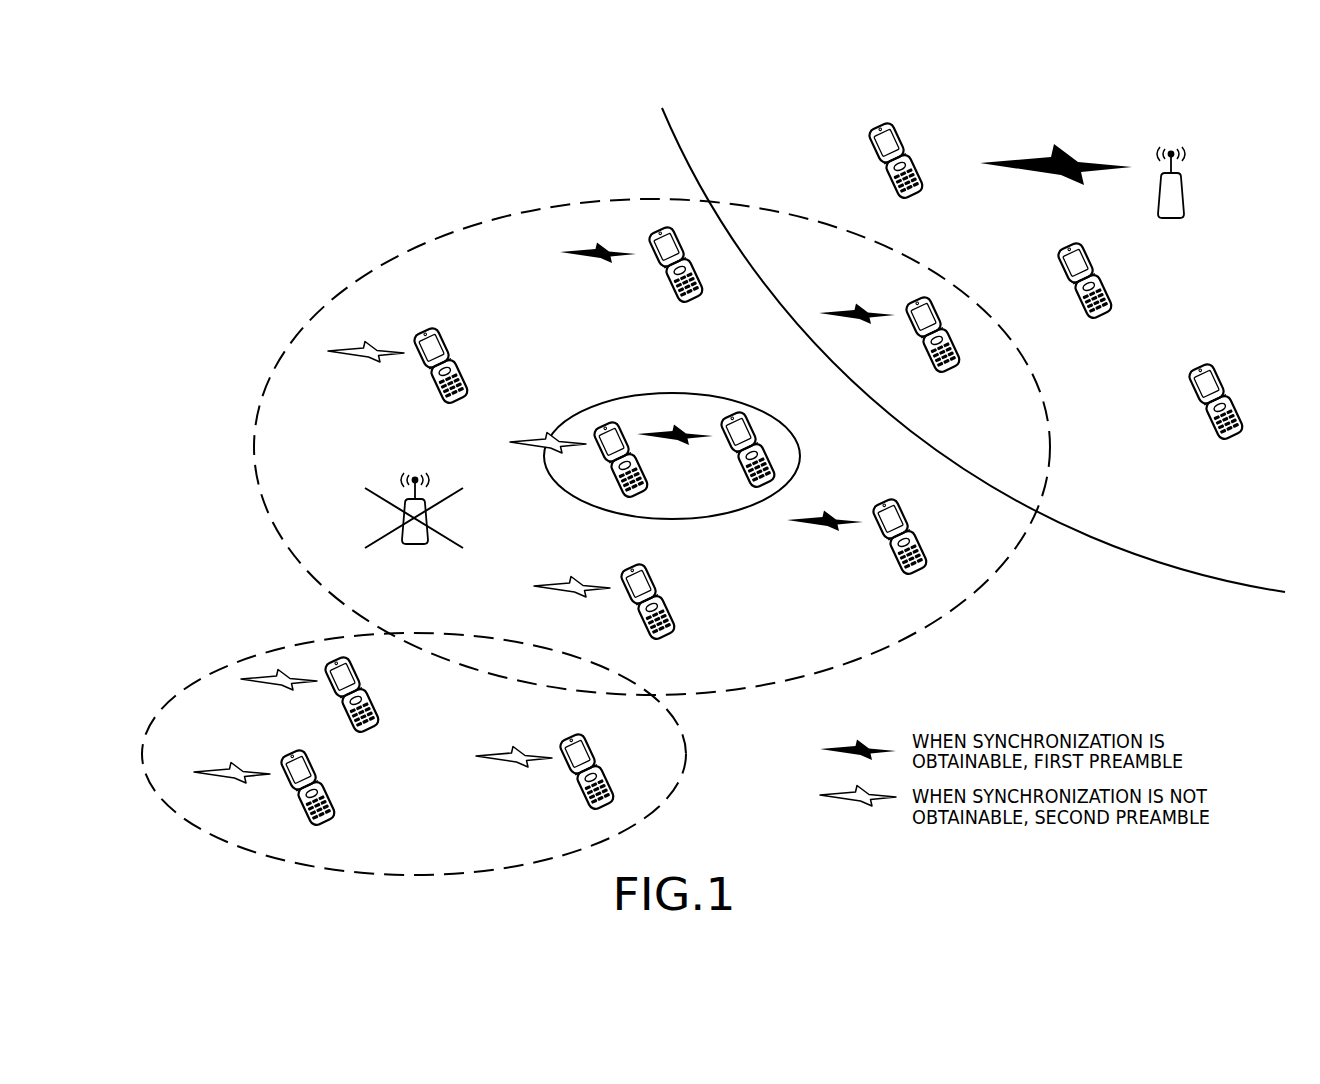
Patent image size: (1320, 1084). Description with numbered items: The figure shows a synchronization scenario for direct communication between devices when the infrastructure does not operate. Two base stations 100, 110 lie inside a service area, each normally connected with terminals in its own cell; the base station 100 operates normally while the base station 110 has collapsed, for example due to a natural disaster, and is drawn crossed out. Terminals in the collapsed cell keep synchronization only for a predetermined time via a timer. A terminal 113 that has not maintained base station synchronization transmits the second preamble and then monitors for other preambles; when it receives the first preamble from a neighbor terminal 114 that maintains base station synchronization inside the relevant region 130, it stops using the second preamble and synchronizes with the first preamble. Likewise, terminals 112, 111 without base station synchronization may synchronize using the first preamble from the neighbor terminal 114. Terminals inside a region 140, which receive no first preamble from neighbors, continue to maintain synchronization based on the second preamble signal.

The base station 100 is at (1177, 219).
The base station 110 is at (416, 544).
The terminal 111 is at (660, 643).
The terminal 112 is at (449, 406).
The terminal 113 is at (626, 498).
The neighbor terminal 114 is at (741, 409).
The region 130 is at (722, 522).
The region 140 is at (224, 662).